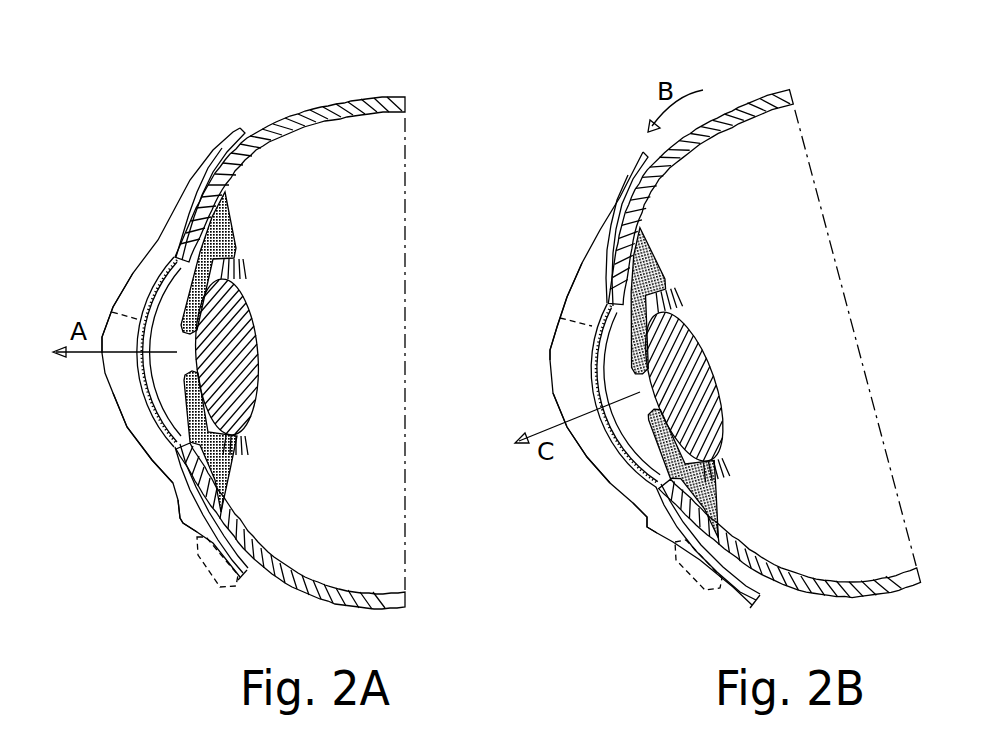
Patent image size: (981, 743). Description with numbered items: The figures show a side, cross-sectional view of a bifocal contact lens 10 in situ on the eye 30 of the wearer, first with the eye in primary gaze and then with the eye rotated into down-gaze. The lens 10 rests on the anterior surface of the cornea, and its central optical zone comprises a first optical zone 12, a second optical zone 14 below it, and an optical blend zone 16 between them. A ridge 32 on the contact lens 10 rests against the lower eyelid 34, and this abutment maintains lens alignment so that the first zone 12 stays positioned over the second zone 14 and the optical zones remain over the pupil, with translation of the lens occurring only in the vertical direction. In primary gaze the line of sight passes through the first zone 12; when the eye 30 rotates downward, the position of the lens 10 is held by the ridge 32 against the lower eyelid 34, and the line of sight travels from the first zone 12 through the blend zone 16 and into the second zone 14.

In FIG. 2A, the bifocal contact lens 10 is at (163, 231).
In FIG. 2B, the bifocal contact lens 10 is at (598, 221).
In FIG. 2A, the first optical zone 12 is at (103, 382).
In FIG. 2B, the first optical zone 12 is at (546, 348).
In FIG. 2A, the second optical zone 14 is at (130, 441).
In FIG. 2B, the second optical zone 14 is at (583, 446).
In FIG. 2A, the optical blend zone 16 is at (140, 391).
In FIG. 2B, the optical blend zone 16 is at (593, 393).
In FIG. 2A, the eye 30 is at (328, 104).
In FIG. 2B, the eye 30 is at (739, 97).
In FIG. 2A, the ridge 32 is at (177, 520).
In FIG. 2B, the ridge 32 is at (642, 525).
In FIG. 2A, the lower eyelid 34 is at (203, 584).
In FIG. 2B, the lower eyelid 34 is at (679, 586).